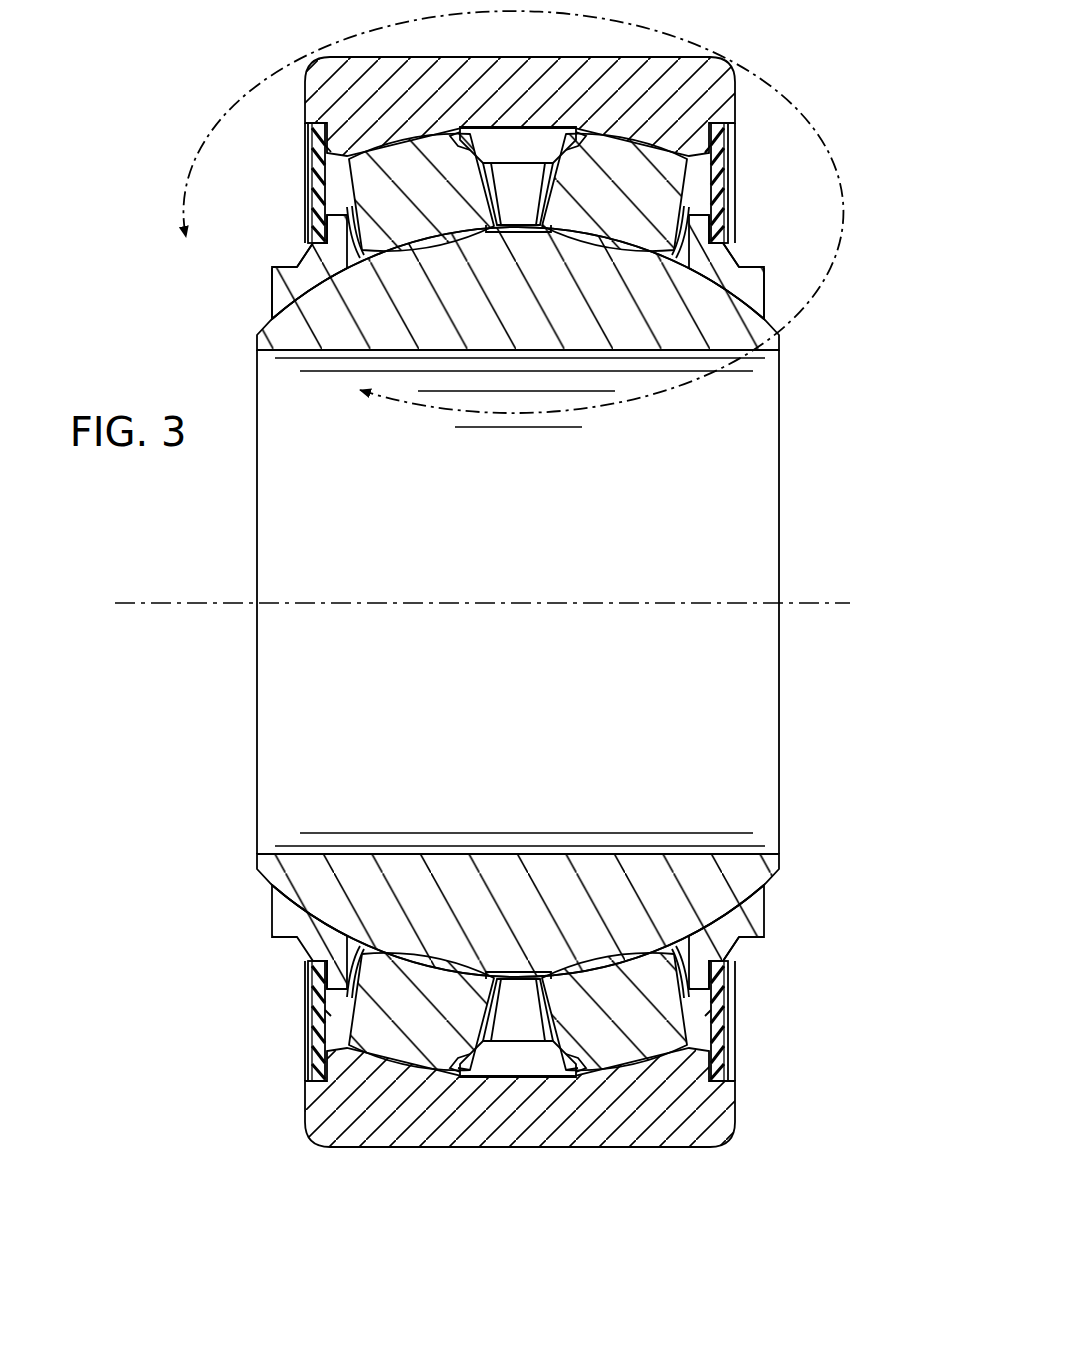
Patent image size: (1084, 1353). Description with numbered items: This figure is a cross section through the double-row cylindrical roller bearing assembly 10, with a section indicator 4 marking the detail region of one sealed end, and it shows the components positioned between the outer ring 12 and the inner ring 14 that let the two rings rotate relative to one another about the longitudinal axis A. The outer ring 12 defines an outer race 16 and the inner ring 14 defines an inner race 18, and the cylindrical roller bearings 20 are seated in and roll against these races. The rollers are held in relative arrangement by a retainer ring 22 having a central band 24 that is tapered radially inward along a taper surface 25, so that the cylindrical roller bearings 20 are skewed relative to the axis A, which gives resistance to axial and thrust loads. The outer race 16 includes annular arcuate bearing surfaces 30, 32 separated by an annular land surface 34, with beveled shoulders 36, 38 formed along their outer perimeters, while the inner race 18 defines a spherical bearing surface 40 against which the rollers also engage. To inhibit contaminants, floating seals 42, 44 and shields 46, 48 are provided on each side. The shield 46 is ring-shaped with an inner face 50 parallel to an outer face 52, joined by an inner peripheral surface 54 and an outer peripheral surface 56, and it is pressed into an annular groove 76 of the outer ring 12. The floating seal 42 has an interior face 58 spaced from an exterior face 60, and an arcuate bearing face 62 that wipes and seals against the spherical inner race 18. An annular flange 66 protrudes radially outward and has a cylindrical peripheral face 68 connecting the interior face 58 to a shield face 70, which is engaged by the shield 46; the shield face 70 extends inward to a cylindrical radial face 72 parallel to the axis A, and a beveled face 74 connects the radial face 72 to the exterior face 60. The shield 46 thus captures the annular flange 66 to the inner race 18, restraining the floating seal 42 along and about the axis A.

The section view indicator 4 is at (504, 212).
The bearing assembly 10 is at (188, 1118).
The outer ring 12 is at (306, 1137).
The inner ring 14 is at (253, 861).
The outer race 16 is at (514, 1066).
The inner race 18 is at (525, 987).
The cylindrical roller bearings 20 is at (416, 201).
The retainer ring 22 is at (503, 1031).
The central band 24 is at (534, 982).
The taper surface 25 is at (458, 1066).
The arcuate bearing surface 30 is at (440, 151).
The arcuate bearing surface 32 is at (600, 148).
The annular land surface 34 is at (503, 153).
The beveled shoulder 36 is at (325, 1043).
The beveled shoulder 38 is at (718, 1038).
The spherical bearing surface 40 is at (770, 875).
The floating seal 42 is at (268, 300).
The floating seal 44 is at (768, 300).
The shield 46 is at (304, 158).
The shield 48 is at (732, 158).
The inner face 50 is at (330, 152).
The outer face 52 is at (318, 181).
The inner peripheral surface 54 is at (330, 957).
The outer peripheral surface 56 is at (312, 1090).
The interior face 58 is at (368, 256).
The exterior face 60 is at (271, 285).
The arcuate bearing face 62 is at (314, 285).
The annular flange 66 is at (334, 212).
The cylindrical peripheral face 68 is at (331, 1013).
The shield face 70 is at (330, 983).
The radial face 72 is at (305, 240).
The beveled face 74 is at (298, 263).
The annular groove 76 is at (320, 122).
The longitudinal axis A is at (820, 603).